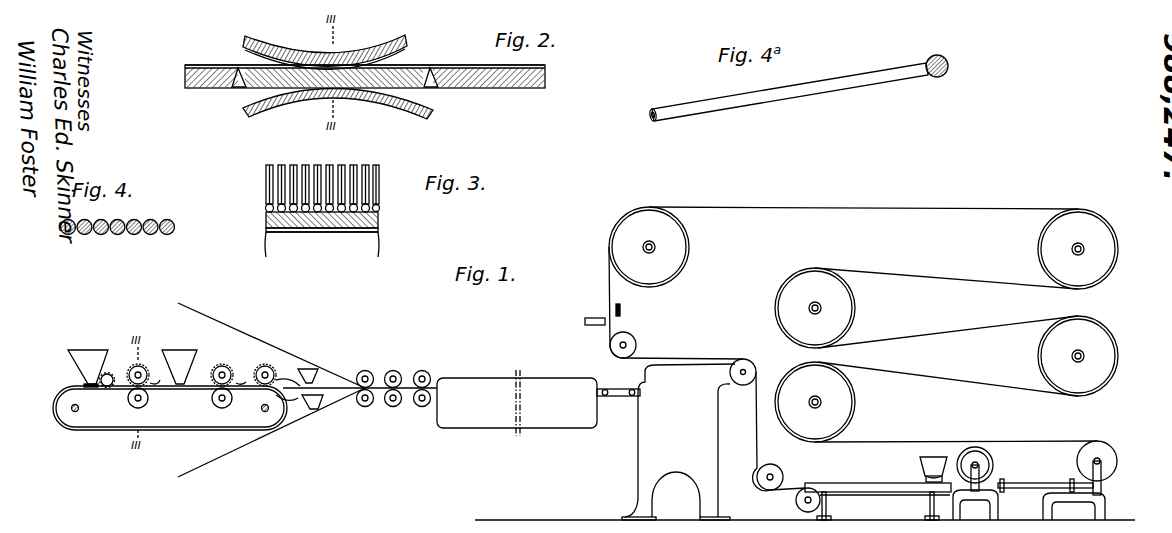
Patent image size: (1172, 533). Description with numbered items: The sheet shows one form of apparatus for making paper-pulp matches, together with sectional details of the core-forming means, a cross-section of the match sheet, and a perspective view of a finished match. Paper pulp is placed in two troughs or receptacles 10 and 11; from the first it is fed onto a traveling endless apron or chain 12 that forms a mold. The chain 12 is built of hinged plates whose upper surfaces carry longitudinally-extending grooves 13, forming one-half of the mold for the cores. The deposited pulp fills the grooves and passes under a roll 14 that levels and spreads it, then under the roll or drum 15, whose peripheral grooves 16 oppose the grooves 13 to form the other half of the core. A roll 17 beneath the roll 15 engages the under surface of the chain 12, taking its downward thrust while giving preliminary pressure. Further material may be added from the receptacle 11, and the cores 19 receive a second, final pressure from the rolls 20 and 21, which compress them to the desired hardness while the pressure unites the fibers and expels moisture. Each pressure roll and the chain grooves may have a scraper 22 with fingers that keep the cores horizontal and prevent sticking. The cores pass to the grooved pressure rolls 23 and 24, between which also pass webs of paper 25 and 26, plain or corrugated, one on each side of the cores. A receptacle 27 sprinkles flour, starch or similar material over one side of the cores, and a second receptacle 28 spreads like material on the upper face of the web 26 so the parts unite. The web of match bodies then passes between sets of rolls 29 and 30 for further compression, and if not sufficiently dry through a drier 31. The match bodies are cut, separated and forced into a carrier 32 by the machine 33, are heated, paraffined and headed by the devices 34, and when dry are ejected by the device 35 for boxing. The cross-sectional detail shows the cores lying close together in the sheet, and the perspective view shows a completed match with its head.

In FIG. 1, the trough or receptacle 10 is at (83, 378).
In FIG. 1, the trough or receptacle 11 is at (179, 358).
In FIG. 2, the traveling endless apron or chain 12 is at (188, 84).
In FIG. 3, the traveling endless apron or chain 12 is at (300, 242).
In FIG. 1, the traveling endless apron or chain 12 is at (84, 432).
In FIG. 2, the longitudinally-extending grooves 13 is at (190, 65).
In FIG. 3, the longitudinally-extending grooves 13 is at (266, 212).
In FIG. 1, the roll 14 is at (111, 371).
In FIG. 2, the roll or drum 15 is at (262, 36).
In FIG. 3, the roll or drum 15 is at (318, 166).
In FIG. 1, the roll or drum 15 is at (145, 365).
In FIG. 2, the peripheral grooves 16 is at (236, 66).
In FIG. 3, the peripheral grooves 16 is at (228, 175).
In FIG. 1, the peripheral grooves 16 is at (129, 366).
In FIG. 2, the roll 17 is at (430, 108).
In FIG. 3, the roll 17 is at (379, 242).
In FIG. 1, the roll 17 is at (125, 406).
In FIG. 4, the cores 19 is at (68, 236).
In FIG. 4A, the cores 19 is at (652, 120).
In FIG. 1, the cores 19 is at (360, 382).
In FIG. 1, the roll 20 is at (224, 364).
In FIG. 1, the roll 21 is at (216, 406).
In FIG. 1, the scraper 22 is at (258, 366).
In FIG. 1, the pressure roll 23 is at (366, 371).
In FIG. 1, the pressure roll 24 is at (365, 406).
In FIG. 1, the web of paper 25 is at (292, 356).
In FIG. 1, the web of paper 26 is at (268, 436).
In FIG. 1, the receptacle 27 is at (316, 372).
In FIG. 1, the receptacle 28 is at (318, 410).
In FIG. 1, the set of rolls 29 is at (395, 371).
In FIG. 1, the set of rolls 30 is at (427, 372).
In FIG. 1, the drier 31 is at (538, 395).
In FIG. 1, the carrier 32 is at (778, 210).
In FIG. 1, the machine 33 is at (645, 447).
In FIG. 1, the devices 34 is at (950, 483).
In FIG. 1, the device 35 is at (621, 310).